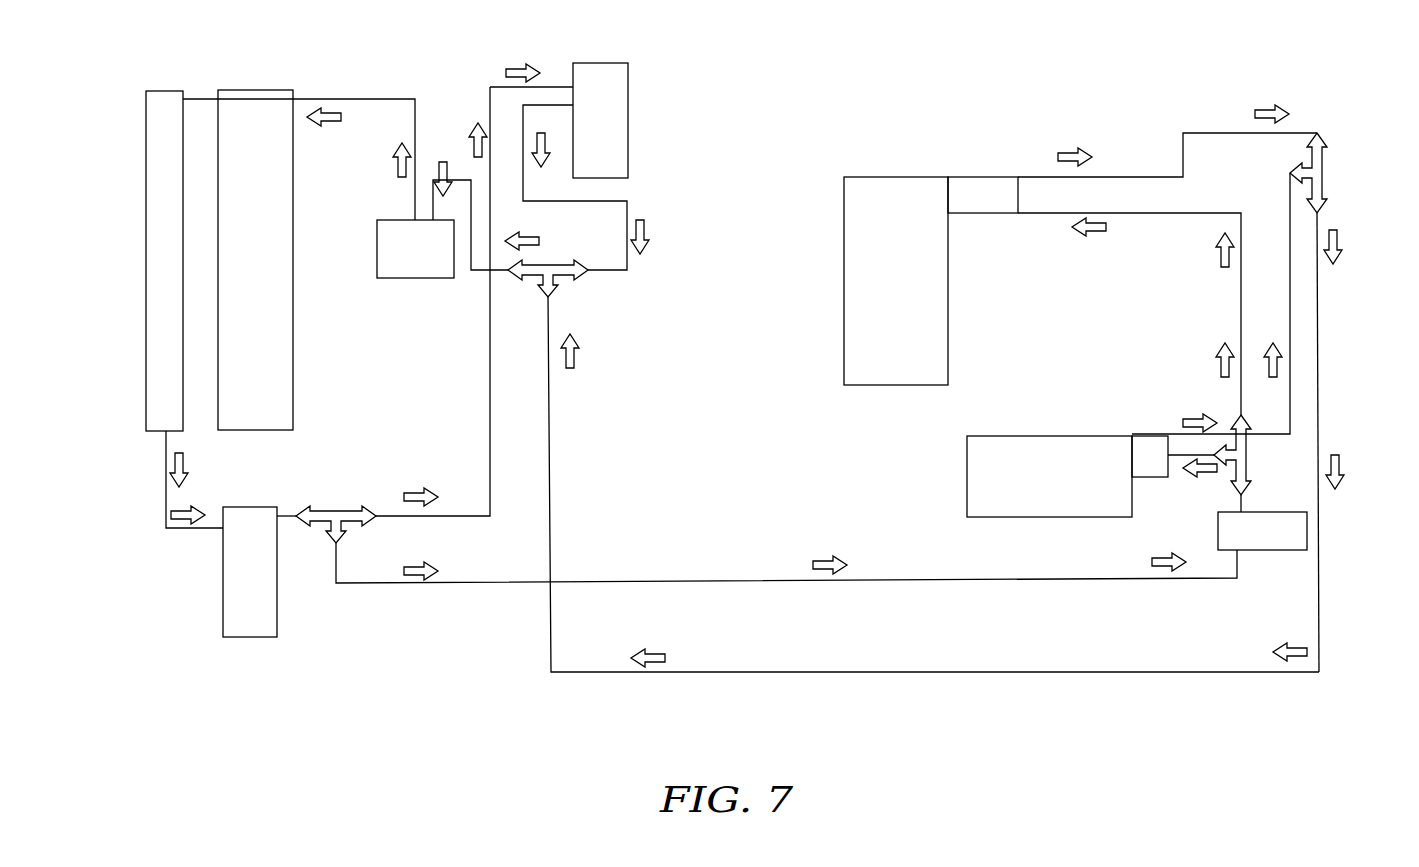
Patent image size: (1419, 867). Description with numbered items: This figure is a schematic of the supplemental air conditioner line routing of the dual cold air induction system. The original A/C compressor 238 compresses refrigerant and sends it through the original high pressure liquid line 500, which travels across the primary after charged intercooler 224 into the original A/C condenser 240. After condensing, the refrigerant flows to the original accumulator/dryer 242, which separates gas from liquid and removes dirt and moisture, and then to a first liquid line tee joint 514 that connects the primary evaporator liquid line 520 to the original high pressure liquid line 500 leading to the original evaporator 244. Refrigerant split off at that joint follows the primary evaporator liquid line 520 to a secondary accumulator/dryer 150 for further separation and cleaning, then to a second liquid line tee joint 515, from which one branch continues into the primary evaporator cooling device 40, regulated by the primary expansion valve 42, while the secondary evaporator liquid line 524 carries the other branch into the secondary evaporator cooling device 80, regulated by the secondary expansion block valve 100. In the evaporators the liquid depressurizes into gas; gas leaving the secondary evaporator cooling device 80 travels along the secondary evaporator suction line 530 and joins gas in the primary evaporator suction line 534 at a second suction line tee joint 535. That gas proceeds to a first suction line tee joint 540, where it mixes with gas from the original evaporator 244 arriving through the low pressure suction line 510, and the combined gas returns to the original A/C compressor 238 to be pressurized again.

The primary evaporator cooling device 40 is at (966, 470).
The primary expansion valve 42 is at (1145, 435).
The secondary evaporator cooling device 80 is at (844, 282).
The secondary expansion block valve 100 is at (982, 177).
The secondary accumulator/dryer 150 is at (1282, 552).
The primary after charged intercooler 224 is at (243, 88).
The original A/C compressor 238 is at (416, 280).
The original A/C condenser 240 is at (146, 252).
The original accumulator/dryer 242 is at (223, 592).
The original evaporator 244 is at (628, 118).
The original high pressure liquid line 500 is at (340, 97).
The low pressure suction line 510 is at (463, 178).
The first liquid line tee joint 514 is at (323, 528).
The second liquid line tee joint 515 is at (1250, 466).
The primary evaporator liquid line 520 is at (472, 585).
The secondary evaporator liquid line 524 is at (1238, 322).
The secondary evaporator suction line 530 is at (1207, 133).
The primary evaporator suction line 534 is at (1318, 332).
The second suction line tee joint 535 is at (1325, 178).
The first suction line tee joint 540 is at (553, 262).